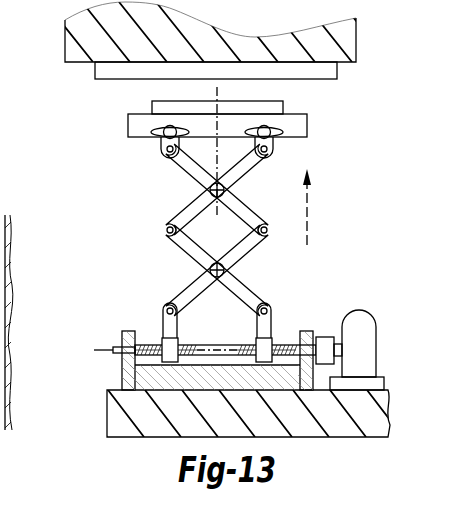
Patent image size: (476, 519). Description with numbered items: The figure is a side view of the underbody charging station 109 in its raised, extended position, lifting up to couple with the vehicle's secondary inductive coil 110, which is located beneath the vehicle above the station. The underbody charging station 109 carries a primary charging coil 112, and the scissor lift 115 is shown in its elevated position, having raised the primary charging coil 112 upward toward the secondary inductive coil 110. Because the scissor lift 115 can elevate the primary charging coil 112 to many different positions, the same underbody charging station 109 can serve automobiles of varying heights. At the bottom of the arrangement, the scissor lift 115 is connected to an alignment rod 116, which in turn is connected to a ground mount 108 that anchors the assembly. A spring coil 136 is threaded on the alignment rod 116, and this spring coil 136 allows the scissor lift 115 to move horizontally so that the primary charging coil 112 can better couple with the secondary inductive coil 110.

The ground mount 108 is at (172, 378).
The underbody charging station 109 is at (327, 193).
The secondary inductive coil 110 is at (100, 80).
The primary charging coil 112 is at (150, 103).
The scissor lift 115 is at (257, 259).
The alignment rod 116 is at (210, 335).
The spring coil 136 is at (250, 356).